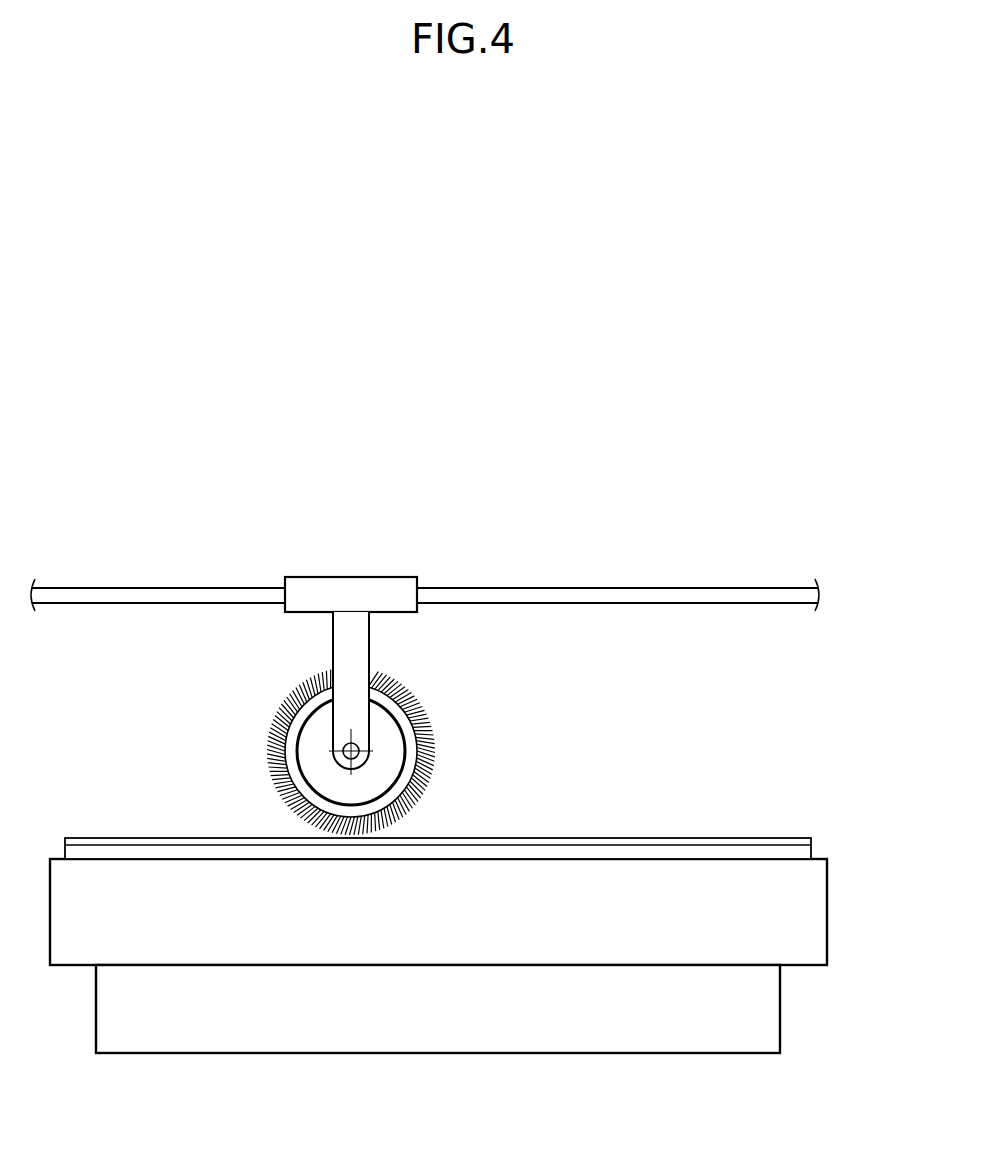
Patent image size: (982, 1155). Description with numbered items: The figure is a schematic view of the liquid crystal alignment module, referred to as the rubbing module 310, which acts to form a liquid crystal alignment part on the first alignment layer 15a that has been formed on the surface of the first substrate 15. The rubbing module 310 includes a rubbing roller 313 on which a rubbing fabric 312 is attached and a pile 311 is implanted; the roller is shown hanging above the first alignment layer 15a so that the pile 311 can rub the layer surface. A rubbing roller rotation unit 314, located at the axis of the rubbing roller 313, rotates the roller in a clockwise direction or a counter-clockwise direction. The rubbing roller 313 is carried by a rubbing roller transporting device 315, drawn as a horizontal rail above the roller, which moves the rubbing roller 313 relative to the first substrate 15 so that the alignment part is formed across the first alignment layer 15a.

The rubbing module 310 is at (483, 571).
The rubbing roller transporting device 315 is at (665, 595).
The rubbing roller 313 is at (387, 663).
The rubbing fabric 312 is at (404, 728).
The pile 311 is at (425, 757).
The rubbing roller rotation unit 314 is at (343, 749).
The first alignment layer 15a is at (758, 842).
The first substrate 15 is at (805, 855).